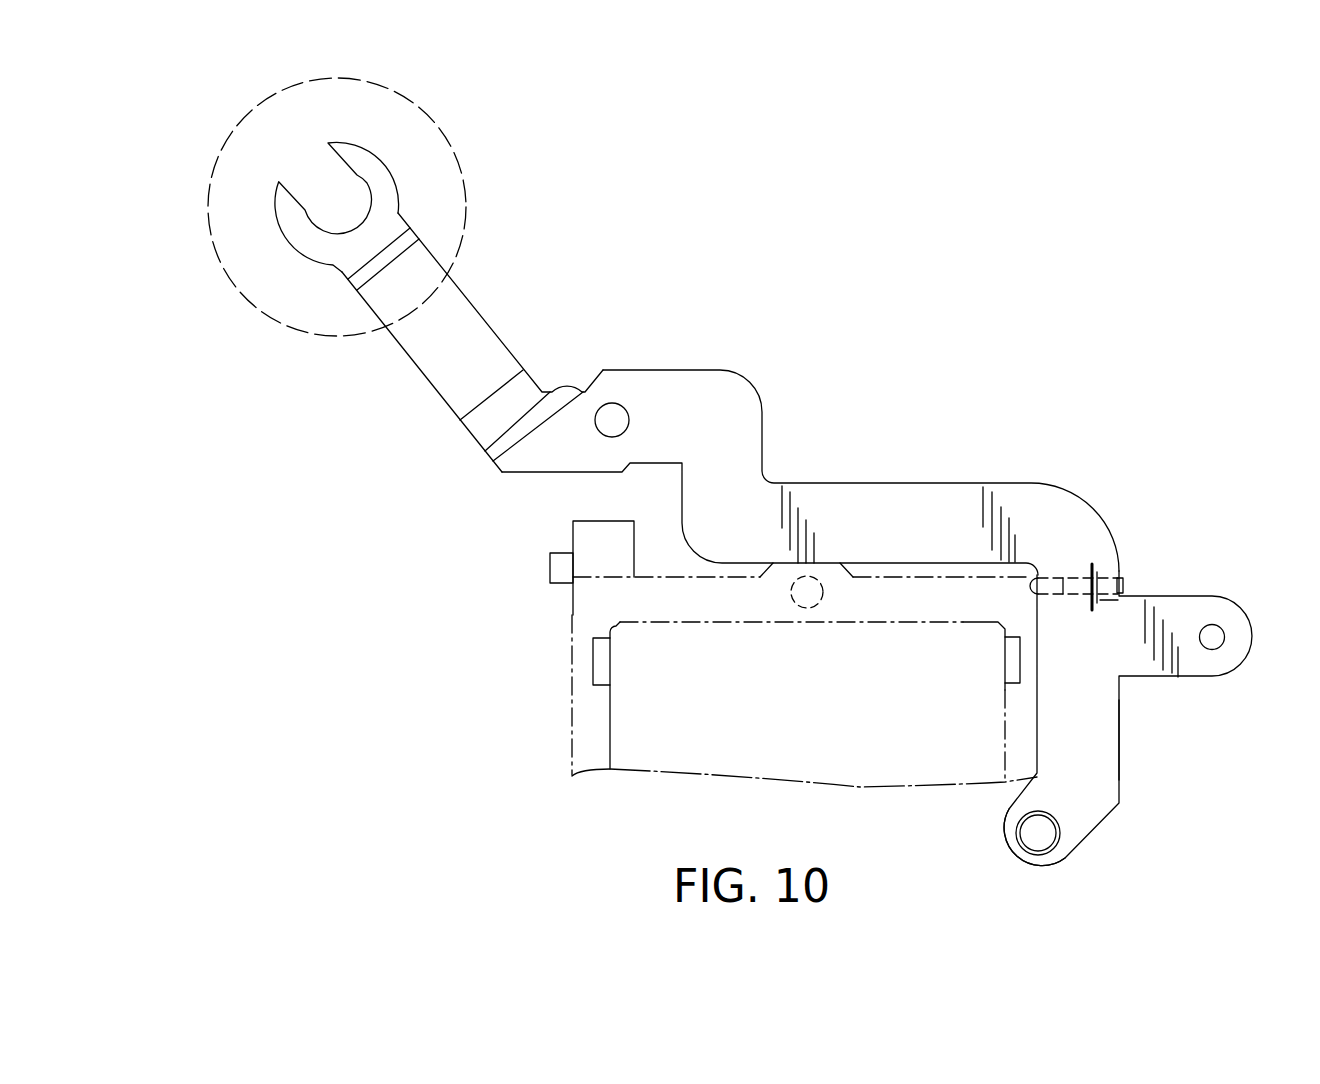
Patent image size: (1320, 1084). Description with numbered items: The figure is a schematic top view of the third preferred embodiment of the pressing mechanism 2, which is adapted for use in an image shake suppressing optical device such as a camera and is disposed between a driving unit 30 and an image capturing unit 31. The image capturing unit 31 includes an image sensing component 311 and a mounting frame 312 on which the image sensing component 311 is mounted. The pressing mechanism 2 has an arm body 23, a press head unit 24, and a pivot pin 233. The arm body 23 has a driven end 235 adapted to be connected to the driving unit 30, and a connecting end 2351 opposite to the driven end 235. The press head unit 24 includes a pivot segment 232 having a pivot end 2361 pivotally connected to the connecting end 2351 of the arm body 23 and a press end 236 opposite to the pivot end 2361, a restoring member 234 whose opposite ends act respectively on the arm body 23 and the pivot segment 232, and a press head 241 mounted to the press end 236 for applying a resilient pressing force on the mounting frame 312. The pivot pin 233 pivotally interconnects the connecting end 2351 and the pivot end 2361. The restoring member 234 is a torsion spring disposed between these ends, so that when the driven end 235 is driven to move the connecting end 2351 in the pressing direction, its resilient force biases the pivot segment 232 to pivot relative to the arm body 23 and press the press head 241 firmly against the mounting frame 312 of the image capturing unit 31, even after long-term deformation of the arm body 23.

The pressing mechanism 2 is at (892, 602).
The arm body 23 is at (898, 483).
The press head unit 24 is at (1160, 767).
The driving unit 30 is at (371, 275).
The image capturing unit 31 is at (707, 654).
The pivot segment 232 is at (1119, 740).
The pivot pin 233 is at (1123, 587).
The restoring member 234 is at (1093, 567).
The driven end 235 is at (283, 213).
The press end 236 is at (1008, 843).
The press head 241 is at (1060, 823).
The image sensing component 311 is at (630, 717).
The mounting frame 312 is at (572, 652).
The connecting end 2351 is at (1107, 570).
The pivot end 2361 is at (1102, 605).